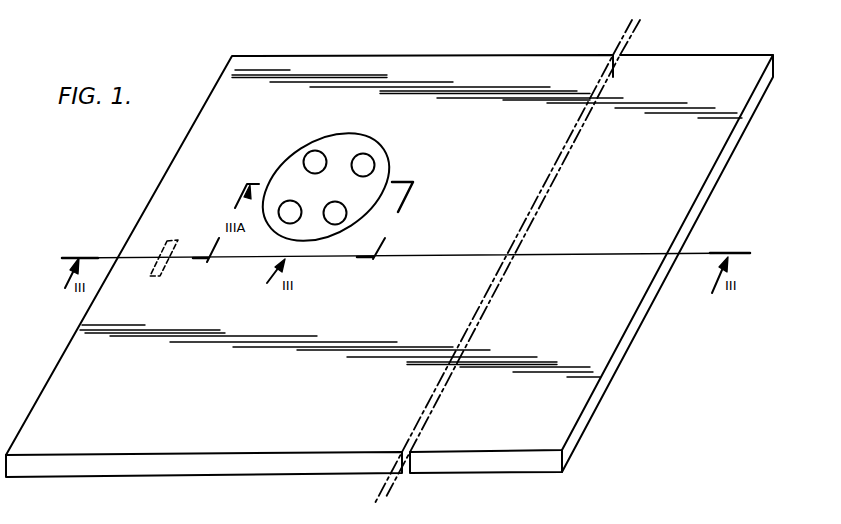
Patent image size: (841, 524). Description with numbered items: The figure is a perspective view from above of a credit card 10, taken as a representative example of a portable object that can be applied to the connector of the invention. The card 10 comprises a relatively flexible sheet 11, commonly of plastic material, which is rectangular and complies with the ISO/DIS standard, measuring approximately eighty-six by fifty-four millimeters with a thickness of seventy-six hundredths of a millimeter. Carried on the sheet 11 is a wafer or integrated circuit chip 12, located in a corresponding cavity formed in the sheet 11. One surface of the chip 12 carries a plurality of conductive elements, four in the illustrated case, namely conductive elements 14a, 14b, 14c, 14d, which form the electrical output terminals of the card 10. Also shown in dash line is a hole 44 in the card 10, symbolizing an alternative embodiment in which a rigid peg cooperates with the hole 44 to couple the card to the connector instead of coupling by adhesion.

The credit card 10 is at (389, 254).
The sheet 11 is at (478, 466).
The integrated circuit chip 12 is at (369, 183).
The conductive element 14a is at (289, 213).
The conductive element 14b is at (335, 215).
The conductive element 14c is at (364, 163).
The conductive element 14d is at (315, 160).
The hole 44 is at (150, 277).